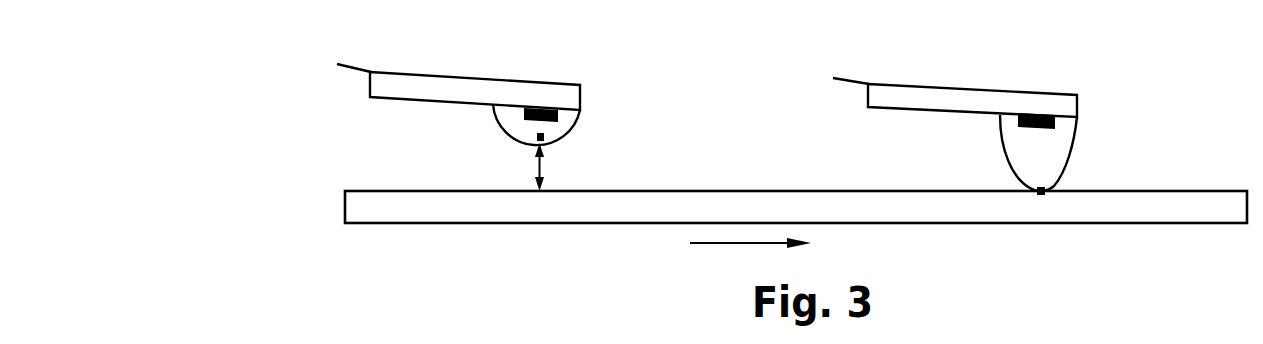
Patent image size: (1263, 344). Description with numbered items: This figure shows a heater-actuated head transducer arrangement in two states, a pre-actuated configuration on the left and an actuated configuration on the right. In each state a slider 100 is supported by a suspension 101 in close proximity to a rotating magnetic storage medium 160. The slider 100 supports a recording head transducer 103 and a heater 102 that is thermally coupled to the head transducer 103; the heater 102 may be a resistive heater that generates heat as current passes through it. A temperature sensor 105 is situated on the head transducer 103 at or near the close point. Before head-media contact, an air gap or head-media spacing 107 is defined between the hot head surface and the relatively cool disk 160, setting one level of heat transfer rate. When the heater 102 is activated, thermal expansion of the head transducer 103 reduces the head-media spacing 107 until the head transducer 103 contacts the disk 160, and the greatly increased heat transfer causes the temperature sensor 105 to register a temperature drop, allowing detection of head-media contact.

The slider 100 is at (487, 75).
The suspension 101 is at (346, 65).
The heater 102 is at (524, 119).
The head transducer 103 is at (573, 117).
The temperature sensor 105 is at (537, 139).
The head-media spacing 107 is at (545, 162).
The magnetic storage medium 160 is at (1147, 224).